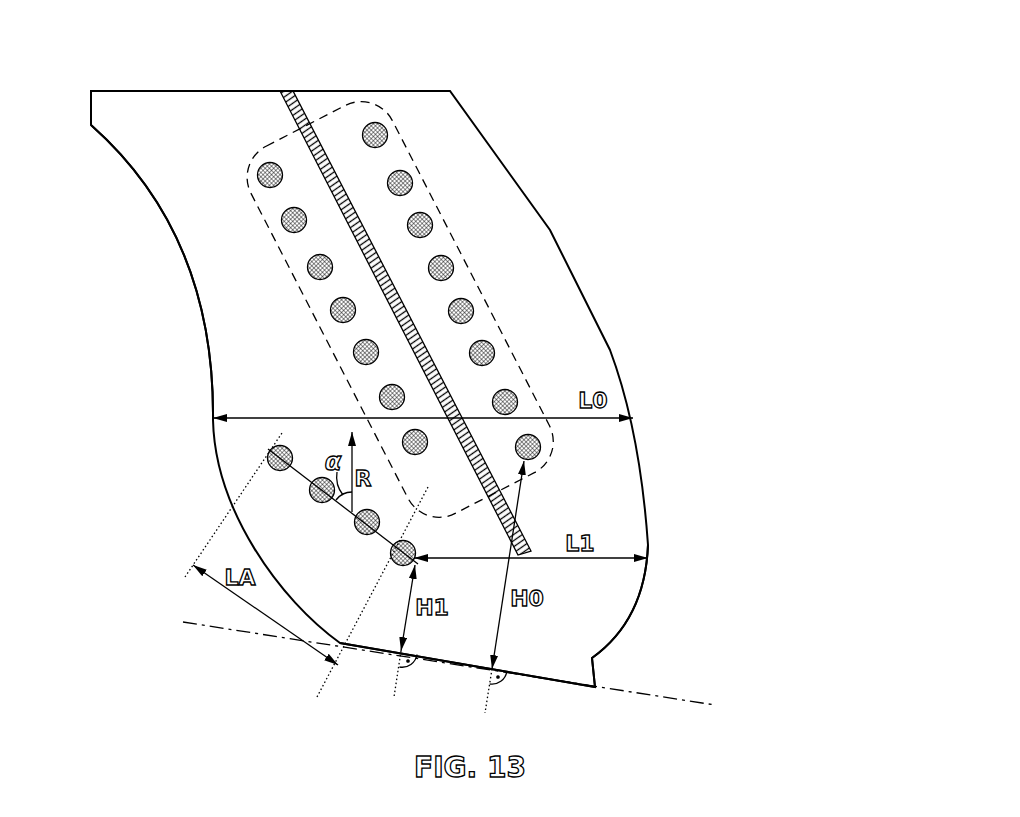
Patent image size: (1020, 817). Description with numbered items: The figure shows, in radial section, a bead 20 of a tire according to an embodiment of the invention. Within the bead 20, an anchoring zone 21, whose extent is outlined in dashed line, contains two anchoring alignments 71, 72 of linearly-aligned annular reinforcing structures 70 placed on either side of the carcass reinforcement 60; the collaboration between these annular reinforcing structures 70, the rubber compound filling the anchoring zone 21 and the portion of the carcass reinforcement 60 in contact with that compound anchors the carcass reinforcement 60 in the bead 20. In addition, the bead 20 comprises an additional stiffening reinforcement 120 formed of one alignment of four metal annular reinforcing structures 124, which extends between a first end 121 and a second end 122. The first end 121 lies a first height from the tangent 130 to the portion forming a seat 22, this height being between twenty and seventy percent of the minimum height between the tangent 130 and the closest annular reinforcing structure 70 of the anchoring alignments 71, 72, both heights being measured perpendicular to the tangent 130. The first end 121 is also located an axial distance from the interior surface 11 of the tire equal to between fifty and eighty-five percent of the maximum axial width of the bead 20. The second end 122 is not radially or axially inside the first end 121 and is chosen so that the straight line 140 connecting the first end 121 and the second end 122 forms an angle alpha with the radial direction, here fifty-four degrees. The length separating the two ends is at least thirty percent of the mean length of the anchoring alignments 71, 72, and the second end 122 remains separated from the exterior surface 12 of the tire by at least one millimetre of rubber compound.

The interior surface 11 is at (652, 527).
The exterior surface 12 is at (186, 256).
The bead 20 is at (617, 167).
The anchoring zone 21 is at (443, 213).
The portion forming a seat 22 is at (467, 667).
The carcass reinforcement 60 is at (511, 515).
The annular reinforcing structures 70 is at (360, 236).
The anchoring alignment 71 is at (255, 145).
The anchoring alignment 72 is at (365, 115).
The additional stiffening reinforcement 120 is at (292, 448).
The first end 121 is at (421, 556).
The second end 122 is at (265, 452).
The metal annular reinforcing structures 124 is at (355, 535).
The tangent 130 is at (675, 698).
The straight line 140 is at (303, 476).